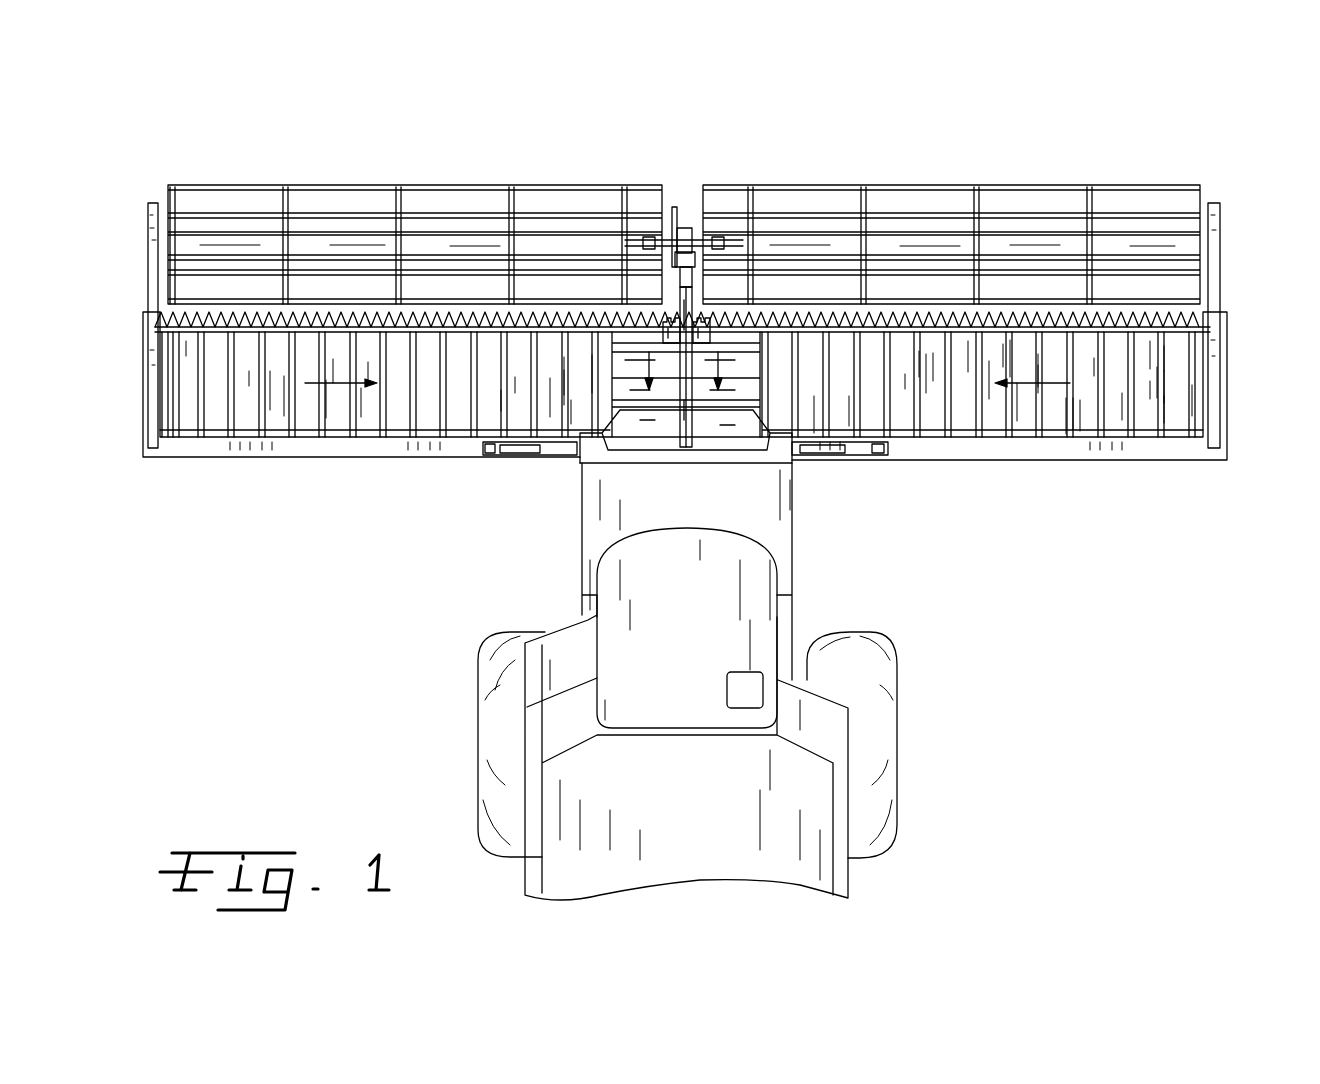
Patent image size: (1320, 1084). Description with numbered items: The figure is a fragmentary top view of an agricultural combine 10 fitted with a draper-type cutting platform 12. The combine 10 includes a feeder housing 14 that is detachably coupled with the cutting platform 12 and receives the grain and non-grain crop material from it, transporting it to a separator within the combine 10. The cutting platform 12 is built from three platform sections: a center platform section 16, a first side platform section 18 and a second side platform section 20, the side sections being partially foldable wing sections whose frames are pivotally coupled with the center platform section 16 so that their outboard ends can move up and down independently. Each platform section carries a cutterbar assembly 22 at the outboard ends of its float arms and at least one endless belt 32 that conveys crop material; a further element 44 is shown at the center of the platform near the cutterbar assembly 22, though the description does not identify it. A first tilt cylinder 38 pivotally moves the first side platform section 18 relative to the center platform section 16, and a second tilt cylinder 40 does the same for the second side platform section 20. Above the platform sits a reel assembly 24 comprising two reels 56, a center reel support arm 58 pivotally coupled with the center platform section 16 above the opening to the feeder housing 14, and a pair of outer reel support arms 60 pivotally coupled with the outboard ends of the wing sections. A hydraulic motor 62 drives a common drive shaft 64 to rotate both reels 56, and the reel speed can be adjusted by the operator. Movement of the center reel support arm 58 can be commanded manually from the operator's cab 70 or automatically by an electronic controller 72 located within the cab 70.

The combine 10 is at (1012, 668).
The cutting platform 12 is at (1102, 157).
The feeder housing 14 is at (795, 515).
The center platform section 16 is at (608, 363).
The first side platform section 18 is at (303, 463).
The second side platform section 20 is at (1072, 460).
The cutterbar assembly 22 is at (1168, 310).
The reel assembly 24 is at (717, 187).
The endless belt 32 is at (222, 427).
The first tilt cylinder 38 is at (548, 457).
The second tilt cylinder 40 is at (822, 462).
The center crop divider 44 is at (662, 332).
The reel 56 is at (436, 186).
The center reel support arm 58 is at (672, 393).
The outer reel support arm 60 is at (148, 258).
The hydraulic motor 62 is at (692, 257).
The drive shaft 64 is at (703, 240).
The operator's cab 70 is at (672, 633).
The electronic controller 72 is at (728, 690).